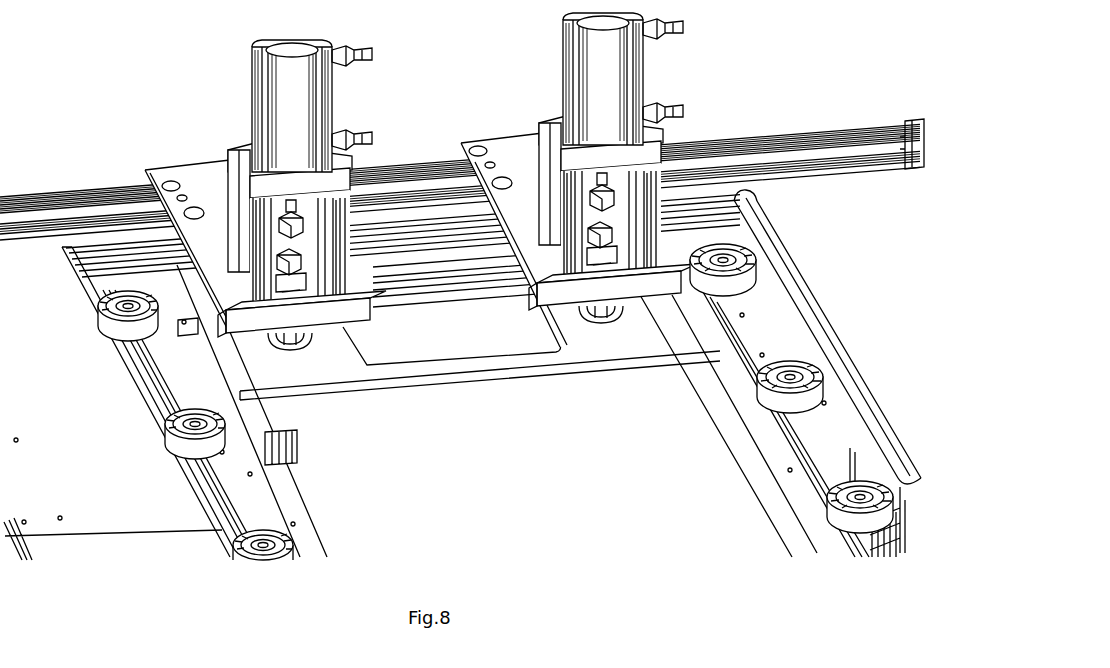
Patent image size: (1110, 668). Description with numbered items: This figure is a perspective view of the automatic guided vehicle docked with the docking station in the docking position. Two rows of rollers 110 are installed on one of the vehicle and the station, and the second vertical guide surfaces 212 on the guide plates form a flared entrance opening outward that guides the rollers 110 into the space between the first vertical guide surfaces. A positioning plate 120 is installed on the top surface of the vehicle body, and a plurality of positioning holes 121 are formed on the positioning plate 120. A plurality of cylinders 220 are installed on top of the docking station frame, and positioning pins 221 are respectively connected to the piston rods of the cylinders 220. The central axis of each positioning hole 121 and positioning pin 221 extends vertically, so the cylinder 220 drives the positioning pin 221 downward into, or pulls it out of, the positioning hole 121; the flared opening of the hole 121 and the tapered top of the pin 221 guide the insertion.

The rollers 110 is at (755, 277).
The positioning plate 120 is at (478, 368).
The positioning hole 121 is at (337, 340).
The second vertical guide surface 212 is at (787, 312).
The cylinder 220 is at (263, 100).
The positioning pin 221 is at (283, 346).